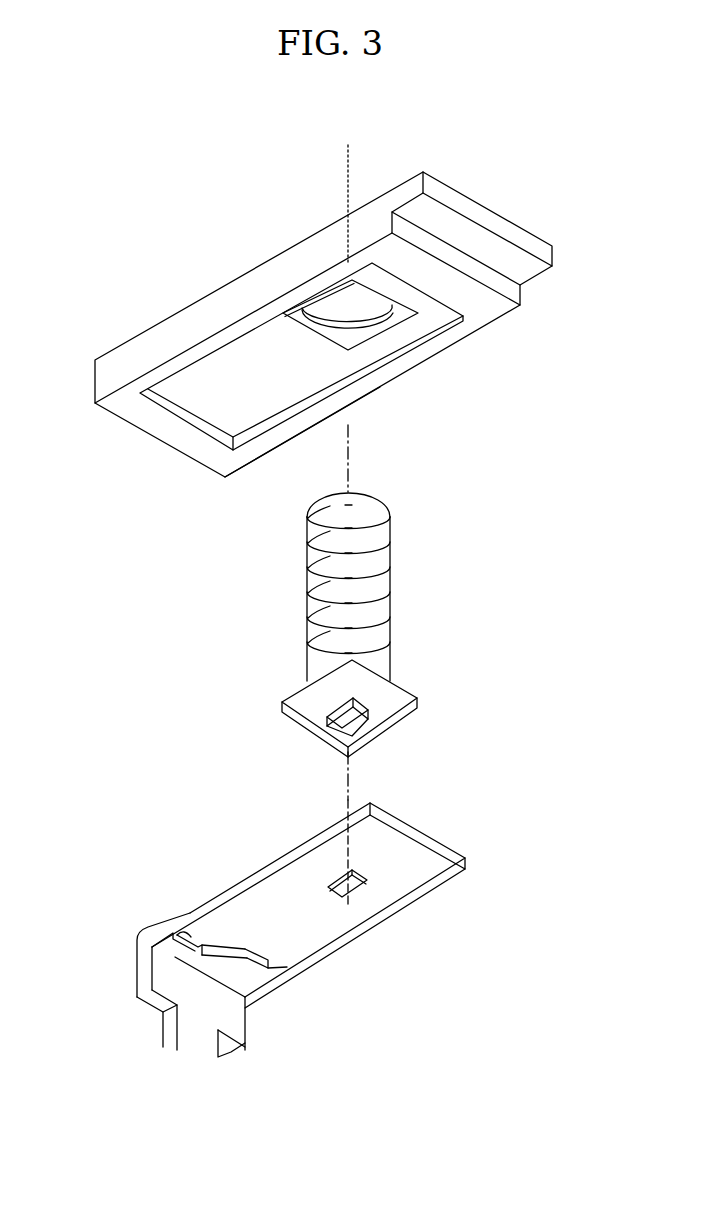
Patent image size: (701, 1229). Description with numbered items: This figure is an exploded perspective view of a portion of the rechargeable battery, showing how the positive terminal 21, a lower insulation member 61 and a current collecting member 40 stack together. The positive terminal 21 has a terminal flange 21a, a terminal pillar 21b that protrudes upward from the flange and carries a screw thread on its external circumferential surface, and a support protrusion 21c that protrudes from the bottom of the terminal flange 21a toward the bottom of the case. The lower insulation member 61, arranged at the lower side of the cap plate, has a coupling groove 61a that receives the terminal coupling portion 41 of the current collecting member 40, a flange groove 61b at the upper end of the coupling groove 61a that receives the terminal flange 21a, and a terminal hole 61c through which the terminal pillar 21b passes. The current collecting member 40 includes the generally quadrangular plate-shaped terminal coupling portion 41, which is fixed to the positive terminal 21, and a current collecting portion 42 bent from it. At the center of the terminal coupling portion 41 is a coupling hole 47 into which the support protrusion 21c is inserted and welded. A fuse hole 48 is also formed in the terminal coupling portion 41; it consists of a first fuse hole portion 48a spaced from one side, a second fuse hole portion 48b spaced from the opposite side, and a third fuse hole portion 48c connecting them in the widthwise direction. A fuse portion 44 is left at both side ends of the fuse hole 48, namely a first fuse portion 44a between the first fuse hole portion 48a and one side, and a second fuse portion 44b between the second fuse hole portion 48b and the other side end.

The lower insulation member 61 is at (256, 251).
The coupling groove 61a is at (265, 427).
The flange groove 61b is at (402, 318).
The terminal hole 61c is at (365, 318).
The positive terminal 21 is at (363, 628).
The terminal flange 21a is at (403, 693).
The terminal pillar 21b is at (316, 607).
The support protrusion 21c is at (355, 722).
The current collecting member 40 is at (191, 879).
The terminal coupling portion 41 is at (426, 875).
The current collecting portion 42 is at (198, 1039).
The fuse portion 44 is at (262, 1037).
The first fuse portion 44a is at (280, 972).
The second fuse portion 44b is at (173, 957).
The coupling hole 47 is at (357, 894).
The fuse hole 48 is at (241, 882).
The first fuse hole portion 48a is at (268, 958).
The second fuse hole portion 48b is at (202, 933).
The third fuse hole portion 48c is at (237, 946).